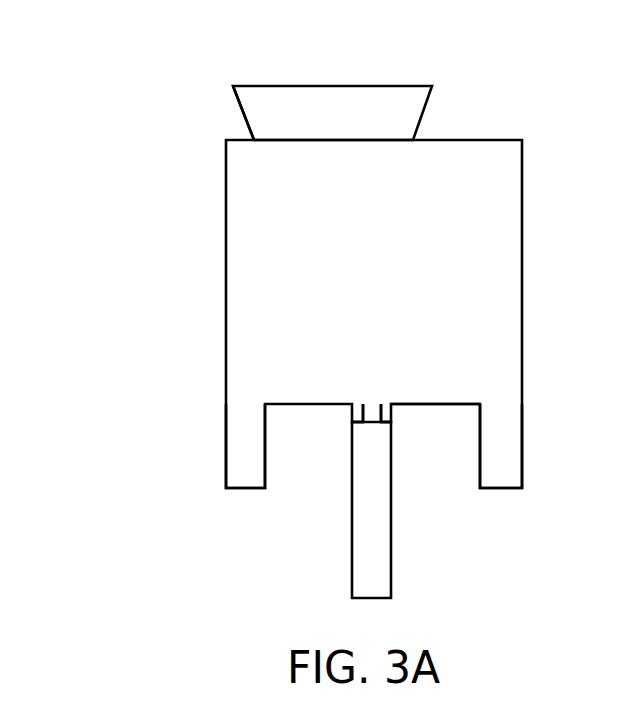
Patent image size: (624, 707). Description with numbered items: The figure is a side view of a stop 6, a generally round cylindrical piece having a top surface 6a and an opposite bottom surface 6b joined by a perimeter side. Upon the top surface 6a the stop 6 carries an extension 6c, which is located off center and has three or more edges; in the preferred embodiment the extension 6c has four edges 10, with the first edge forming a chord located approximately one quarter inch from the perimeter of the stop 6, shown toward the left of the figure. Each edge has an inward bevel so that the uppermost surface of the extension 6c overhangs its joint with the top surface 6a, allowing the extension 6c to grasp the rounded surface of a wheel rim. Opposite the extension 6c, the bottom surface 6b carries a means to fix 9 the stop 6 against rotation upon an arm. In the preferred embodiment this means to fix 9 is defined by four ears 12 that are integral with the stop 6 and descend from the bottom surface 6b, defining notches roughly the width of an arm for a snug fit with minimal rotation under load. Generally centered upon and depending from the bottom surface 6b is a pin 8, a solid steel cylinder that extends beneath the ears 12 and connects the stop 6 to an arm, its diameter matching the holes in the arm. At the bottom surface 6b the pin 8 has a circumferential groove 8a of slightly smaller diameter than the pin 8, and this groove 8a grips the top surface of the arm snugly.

The stop 6 is at (314, 308).
The top surface 6a is at (483, 140).
The bottom surface 6b is at (428, 404).
The extension 6c is at (333, 86).
The pin 8 is at (351, 563).
The circumferential groove 8a is at (352, 414).
The means to fix 9 is at (235, 450).
The edges 10 is at (238, 97).
The ears 12 is at (509, 452).